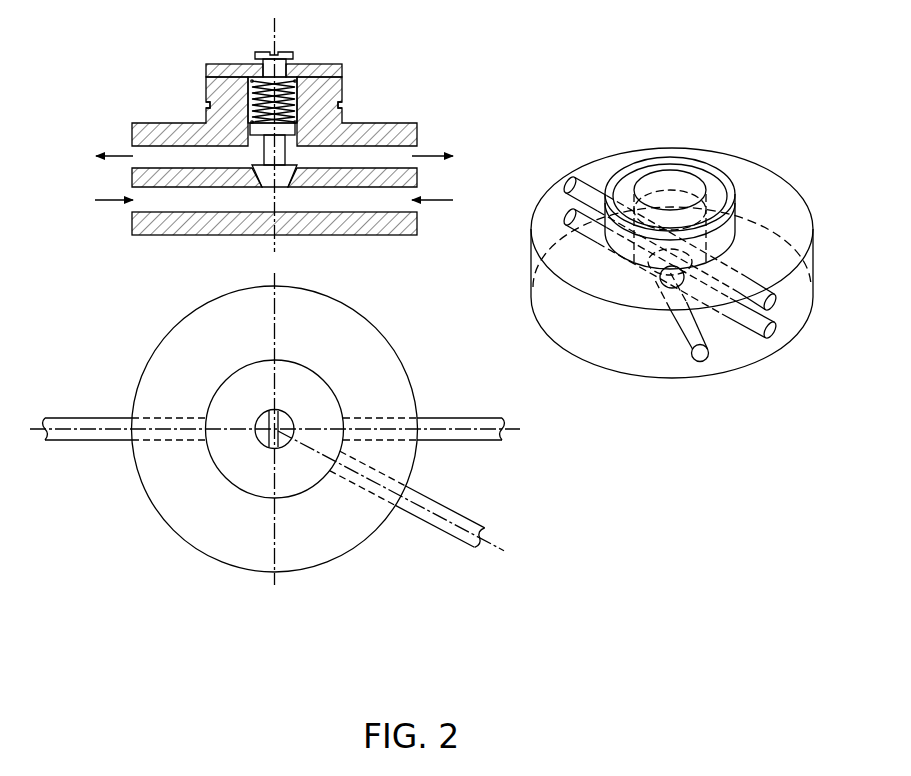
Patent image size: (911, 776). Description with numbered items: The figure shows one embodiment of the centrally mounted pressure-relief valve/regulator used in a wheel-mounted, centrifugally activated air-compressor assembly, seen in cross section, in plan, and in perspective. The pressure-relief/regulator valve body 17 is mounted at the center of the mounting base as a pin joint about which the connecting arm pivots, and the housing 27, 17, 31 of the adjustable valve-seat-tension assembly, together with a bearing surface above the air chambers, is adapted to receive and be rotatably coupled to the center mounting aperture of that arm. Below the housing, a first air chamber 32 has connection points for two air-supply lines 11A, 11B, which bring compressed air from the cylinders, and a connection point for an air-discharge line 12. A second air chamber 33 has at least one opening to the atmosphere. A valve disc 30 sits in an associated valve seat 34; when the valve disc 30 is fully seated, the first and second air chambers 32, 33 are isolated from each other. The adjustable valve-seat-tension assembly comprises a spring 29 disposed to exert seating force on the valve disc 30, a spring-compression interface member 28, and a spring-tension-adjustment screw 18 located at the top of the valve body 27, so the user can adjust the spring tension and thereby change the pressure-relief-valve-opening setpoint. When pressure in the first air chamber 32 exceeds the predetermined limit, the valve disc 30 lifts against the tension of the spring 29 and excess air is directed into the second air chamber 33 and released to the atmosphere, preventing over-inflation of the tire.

The air-supply line 11A is at (62, 442).
The air-supply line 11B is at (492, 442).
The air-discharge line 12 is at (445, 535).
The pressure-relief/regulator valve body 17 is at (343, 88).
The adjustment screw 18 is at (260, 53).
The valve body 27 is at (325, 70).
The spring-compression interface member 28 is at (297, 76).
The spring 29 is at (253, 108).
The valve disc 30 is at (265, 174).
The housing 31 is at (343, 106).
The first air chamber 32 is at (408, 197).
The second air chamber 33 is at (408, 152).
The valve seat 34 is at (258, 180).